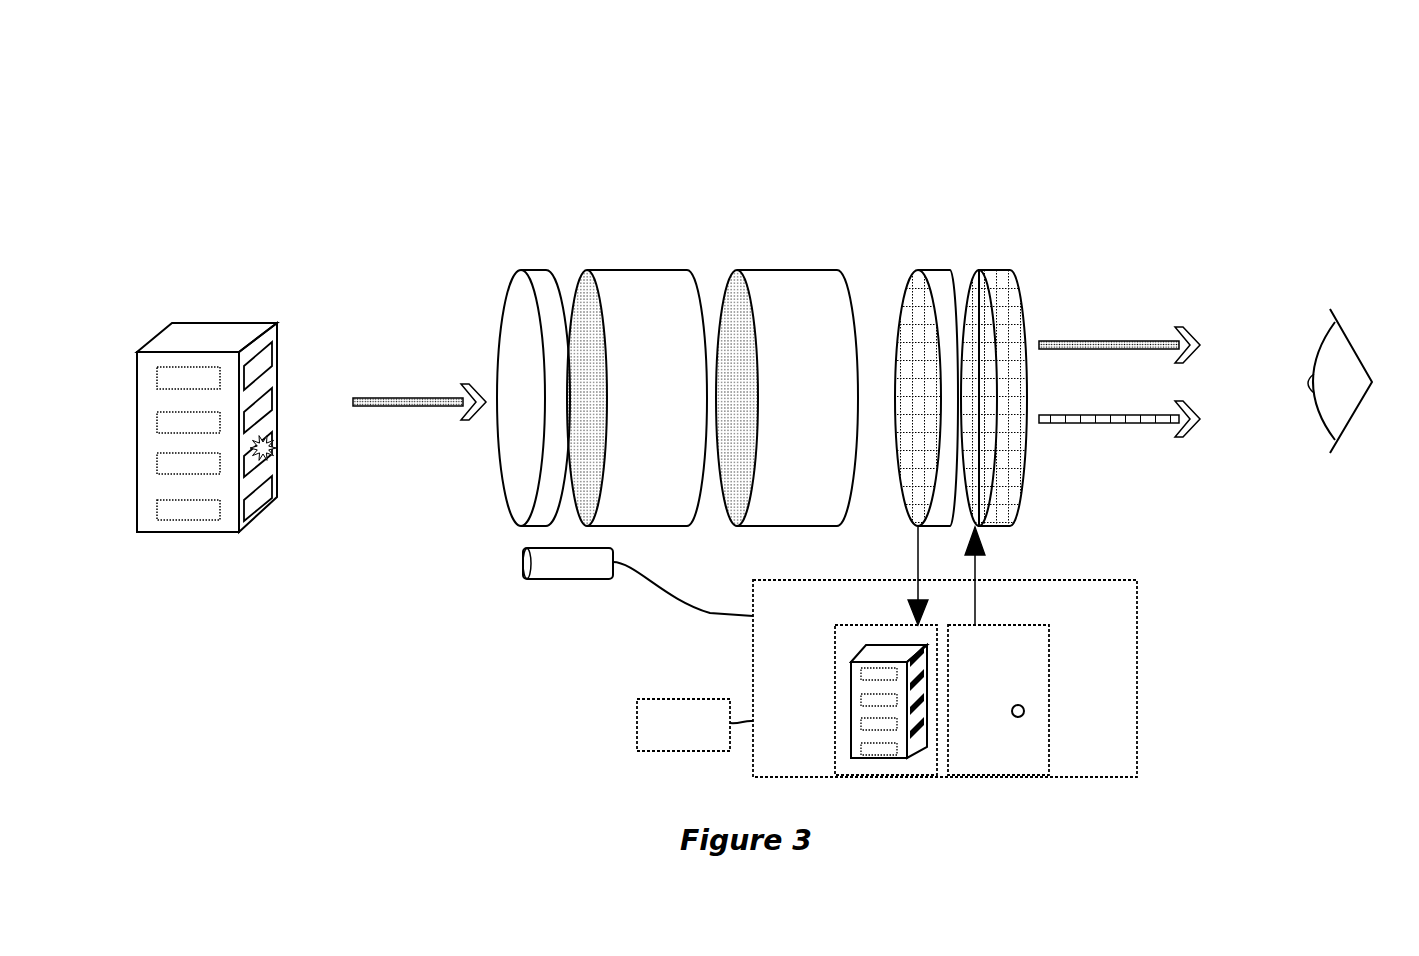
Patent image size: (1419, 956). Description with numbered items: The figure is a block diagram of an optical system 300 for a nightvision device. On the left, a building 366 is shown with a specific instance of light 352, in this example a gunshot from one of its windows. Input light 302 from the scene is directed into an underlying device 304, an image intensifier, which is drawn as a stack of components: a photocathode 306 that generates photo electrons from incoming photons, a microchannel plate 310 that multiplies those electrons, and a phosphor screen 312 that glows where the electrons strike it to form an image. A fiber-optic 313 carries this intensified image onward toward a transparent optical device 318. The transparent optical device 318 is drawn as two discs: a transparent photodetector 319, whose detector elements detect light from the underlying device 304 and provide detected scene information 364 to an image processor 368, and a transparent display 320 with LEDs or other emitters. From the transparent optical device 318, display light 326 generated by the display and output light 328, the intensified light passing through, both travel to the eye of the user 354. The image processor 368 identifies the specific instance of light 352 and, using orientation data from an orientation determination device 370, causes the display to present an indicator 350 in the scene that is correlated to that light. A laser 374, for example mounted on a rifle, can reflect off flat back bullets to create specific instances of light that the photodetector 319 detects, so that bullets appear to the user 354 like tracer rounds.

The optical system 300 is at (954, 47).
The building 366 is at (210, 329).
The specific instance of light 352 is at (276, 446).
The input light 302 is at (386, 399).
The underlying device 304 is at (506, 178).
The photocathode 306 is at (541, 277).
The microchannel plate 310 is at (630, 410).
The phosphor screen 312 is at (736, 272).
The fiber-optic 313 is at (788, 410).
The transparent optical device 318 is at (1020, 216).
The transparent photodetector 319 is at (921, 273).
The transparent display 320 is at (997, 277).
The display light 326 is at (1068, 341).
The output light 328 is at (1060, 414).
The user 354 is at (1349, 288).
The laser 374 is at (554, 578).
The orientation determination device 370 is at (666, 738).
The image processor 368 is at (1073, 758).
The detected scene information 364 is at (846, 630).
The indicator 350 is at (1026, 711).